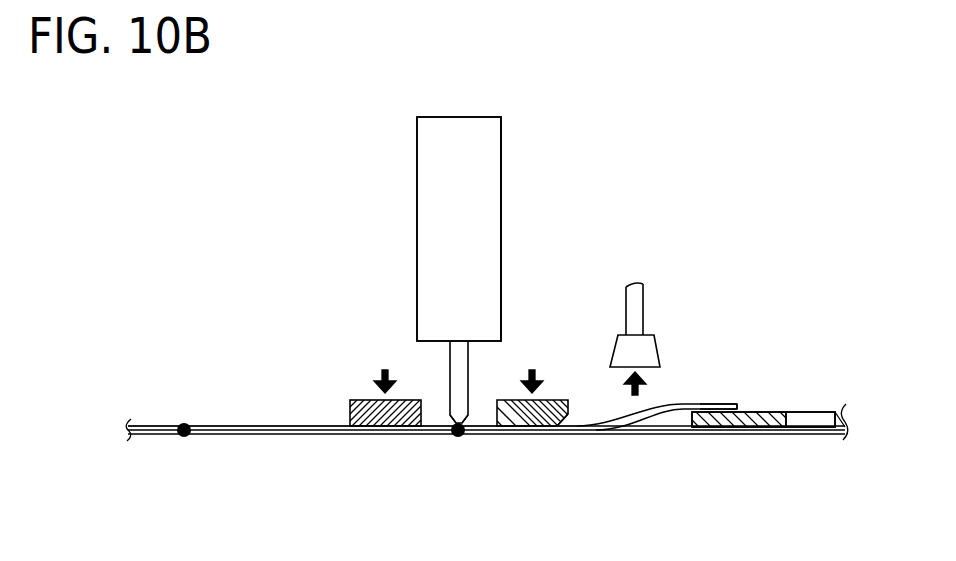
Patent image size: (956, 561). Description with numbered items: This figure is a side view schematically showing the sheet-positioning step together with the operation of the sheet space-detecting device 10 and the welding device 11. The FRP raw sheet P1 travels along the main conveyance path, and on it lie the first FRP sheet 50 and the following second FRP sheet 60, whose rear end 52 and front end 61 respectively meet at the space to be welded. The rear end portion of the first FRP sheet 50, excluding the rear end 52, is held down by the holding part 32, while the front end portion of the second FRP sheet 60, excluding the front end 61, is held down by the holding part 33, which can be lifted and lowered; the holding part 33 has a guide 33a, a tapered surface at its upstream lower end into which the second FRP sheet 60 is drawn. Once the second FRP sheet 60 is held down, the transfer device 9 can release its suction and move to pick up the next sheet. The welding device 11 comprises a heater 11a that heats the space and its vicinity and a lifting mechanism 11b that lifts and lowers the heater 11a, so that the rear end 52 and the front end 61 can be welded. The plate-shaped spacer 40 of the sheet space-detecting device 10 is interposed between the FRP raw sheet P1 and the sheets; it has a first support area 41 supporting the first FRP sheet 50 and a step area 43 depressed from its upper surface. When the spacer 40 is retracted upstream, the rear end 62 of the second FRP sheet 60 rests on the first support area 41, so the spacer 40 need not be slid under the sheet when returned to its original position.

The sheet space-detecting device 10 is at (530, 157).
The welding device 11 is at (398, 160).
The heater 11a is at (470, 363).
The lifting mechanism 11b is at (502, 245).
The rear end 52 is at (455, 420).
The front end 61 is at (462, 420).
The holding part 32 is at (367, 400).
The holding part 33 is at (550, 398).
The guide 33a is at (565, 420).
The transfer device 9 is at (643, 315).
The second FRP sheet 60 is at (653, 407).
The rear end 62 is at (742, 402).
The first FRP sheet 50 is at (287, 426).
The FRP raw sheet P1 is at (326, 437).
The first support area 41 is at (757, 394).
The spacer 40 is at (745, 418).
The step area 43 is at (805, 418).